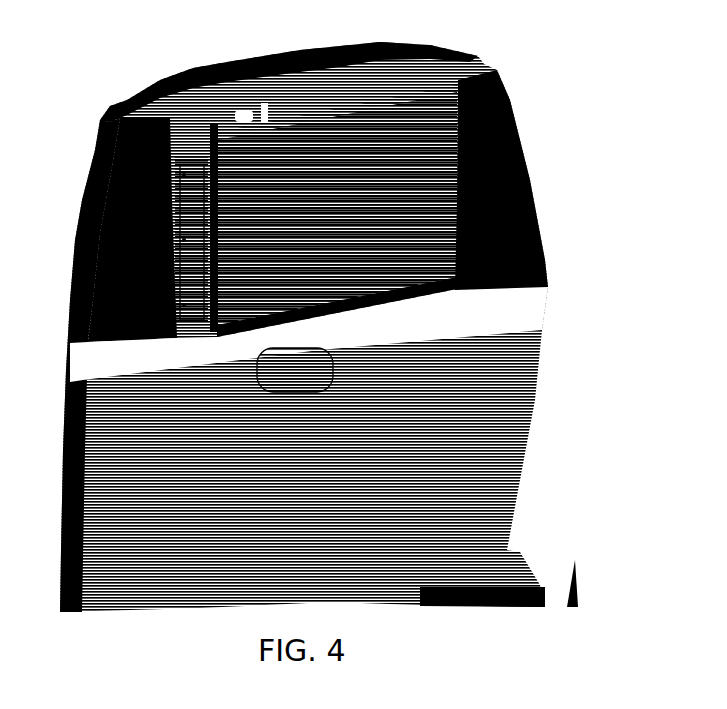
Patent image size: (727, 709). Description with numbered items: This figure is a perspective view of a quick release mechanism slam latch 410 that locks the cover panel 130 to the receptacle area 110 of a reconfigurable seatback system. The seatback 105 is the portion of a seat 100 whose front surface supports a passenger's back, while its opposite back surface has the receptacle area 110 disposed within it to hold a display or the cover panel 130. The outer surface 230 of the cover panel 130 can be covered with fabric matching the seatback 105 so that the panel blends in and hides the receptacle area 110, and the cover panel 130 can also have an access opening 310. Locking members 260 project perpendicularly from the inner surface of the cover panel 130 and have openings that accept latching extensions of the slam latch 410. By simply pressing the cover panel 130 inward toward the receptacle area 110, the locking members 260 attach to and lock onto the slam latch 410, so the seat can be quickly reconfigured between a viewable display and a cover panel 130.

The seat 100 is at (575, 252).
The seatback 105 is at (500, 135).
The receptacle area 110 is at (188, 82).
The cover panel 130 is at (337, 217).
The outer surface 230 is at (410, 131).
The locking members 260 is at (210, 188).
The access opening 310 is at (232, 337).
The slam latch 410 is at (187, 178).